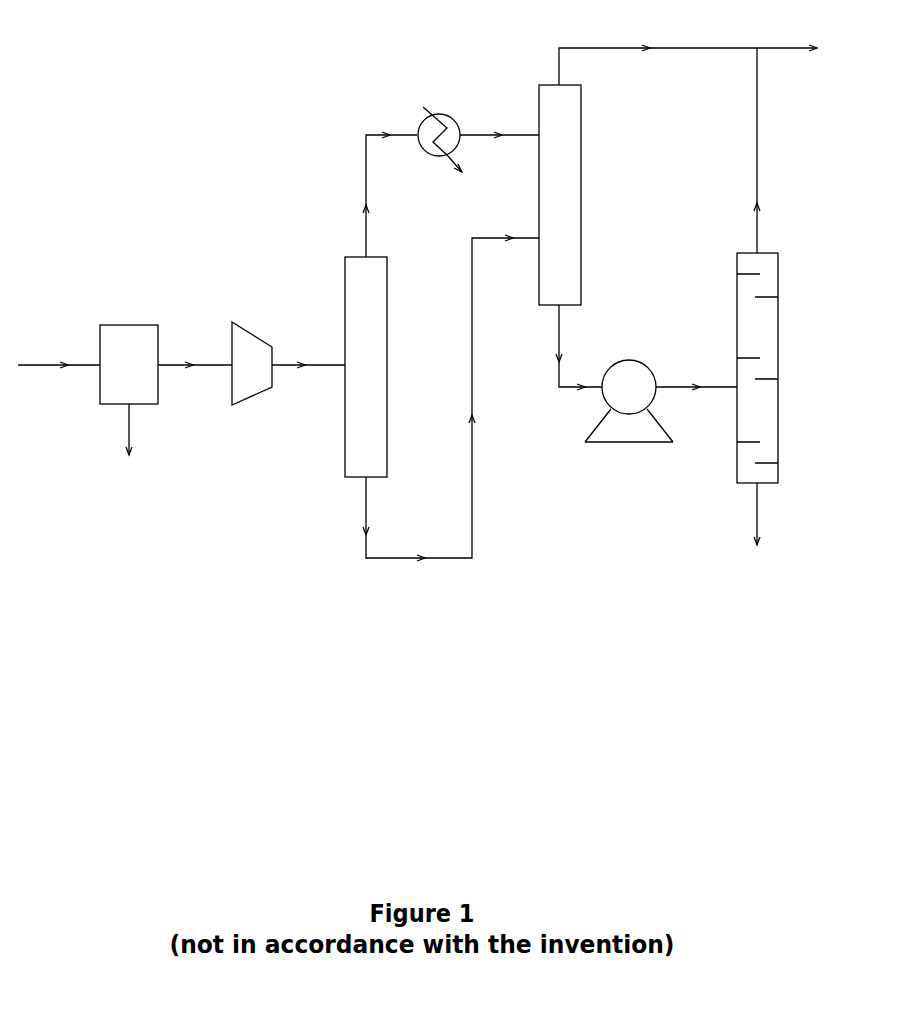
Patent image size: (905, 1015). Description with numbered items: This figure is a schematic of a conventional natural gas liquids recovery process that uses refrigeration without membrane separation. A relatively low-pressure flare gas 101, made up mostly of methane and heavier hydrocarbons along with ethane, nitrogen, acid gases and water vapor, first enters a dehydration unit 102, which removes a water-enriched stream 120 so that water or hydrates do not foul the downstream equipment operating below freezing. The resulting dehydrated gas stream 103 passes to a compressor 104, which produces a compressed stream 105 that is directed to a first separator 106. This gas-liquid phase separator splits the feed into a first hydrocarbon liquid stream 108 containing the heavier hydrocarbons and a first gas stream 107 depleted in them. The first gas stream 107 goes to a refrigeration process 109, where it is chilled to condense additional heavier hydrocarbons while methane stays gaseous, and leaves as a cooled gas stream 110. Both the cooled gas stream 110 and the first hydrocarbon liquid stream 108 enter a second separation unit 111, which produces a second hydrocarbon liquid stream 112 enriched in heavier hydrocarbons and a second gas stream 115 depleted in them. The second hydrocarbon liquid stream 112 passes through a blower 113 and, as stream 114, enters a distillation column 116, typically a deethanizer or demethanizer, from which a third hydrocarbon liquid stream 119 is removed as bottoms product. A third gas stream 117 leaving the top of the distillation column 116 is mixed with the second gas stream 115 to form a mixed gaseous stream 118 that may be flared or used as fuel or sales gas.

The flare gas 101 is at (59, 377).
The dehydration unit 102 is at (127, 325).
The dehydrated gas stream 103 is at (195, 377).
The compressor 104 is at (258, 396).
The compressed stream 105 is at (308, 377).
The first separator 106 is at (345, 300).
The first gas stream 107 is at (390, 184).
The first hydrocarbon liquid stream 108 is at (451, 411).
The refrigeration process 109 is at (453, 112).
The cooled gas stream 110 is at (499, 125).
The second separation unit 111 is at (581, 150).
The second hydrocarbon liquid stream 112 is at (561, 347).
The blower 113 is at (630, 360).
The pumped stream 114 is at (696, 376).
The second gas stream 115 is at (658, 54).
The distillation column 116 is at (778, 320).
The third gas stream 117 is at (739, 150).
The mixed gaseous stream 118 is at (806, 48).
The third hydrocarbon liquid stream 119 is at (757, 528).
The water-enriched stream 120 is at (130, 446).